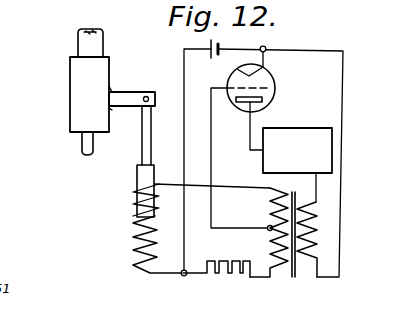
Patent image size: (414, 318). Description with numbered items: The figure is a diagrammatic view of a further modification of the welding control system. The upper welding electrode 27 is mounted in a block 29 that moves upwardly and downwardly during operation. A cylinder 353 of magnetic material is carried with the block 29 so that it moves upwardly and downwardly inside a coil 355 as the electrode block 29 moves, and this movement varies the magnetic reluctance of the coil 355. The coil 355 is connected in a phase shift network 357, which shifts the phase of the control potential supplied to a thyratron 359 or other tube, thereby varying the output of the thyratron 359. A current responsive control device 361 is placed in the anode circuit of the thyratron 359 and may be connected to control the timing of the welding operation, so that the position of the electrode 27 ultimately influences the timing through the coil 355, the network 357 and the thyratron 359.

The block 29 is at (78, 88).
The upper electrode 27 is at (83, 147).
The cylinder 353 is at (137, 181).
The coil 355 is at (133, 240).
The phase shift network 357 is at (233, 251).
The thyratron 359 is at (271, 80).
The current responsive control device 361 is at (307, 121).